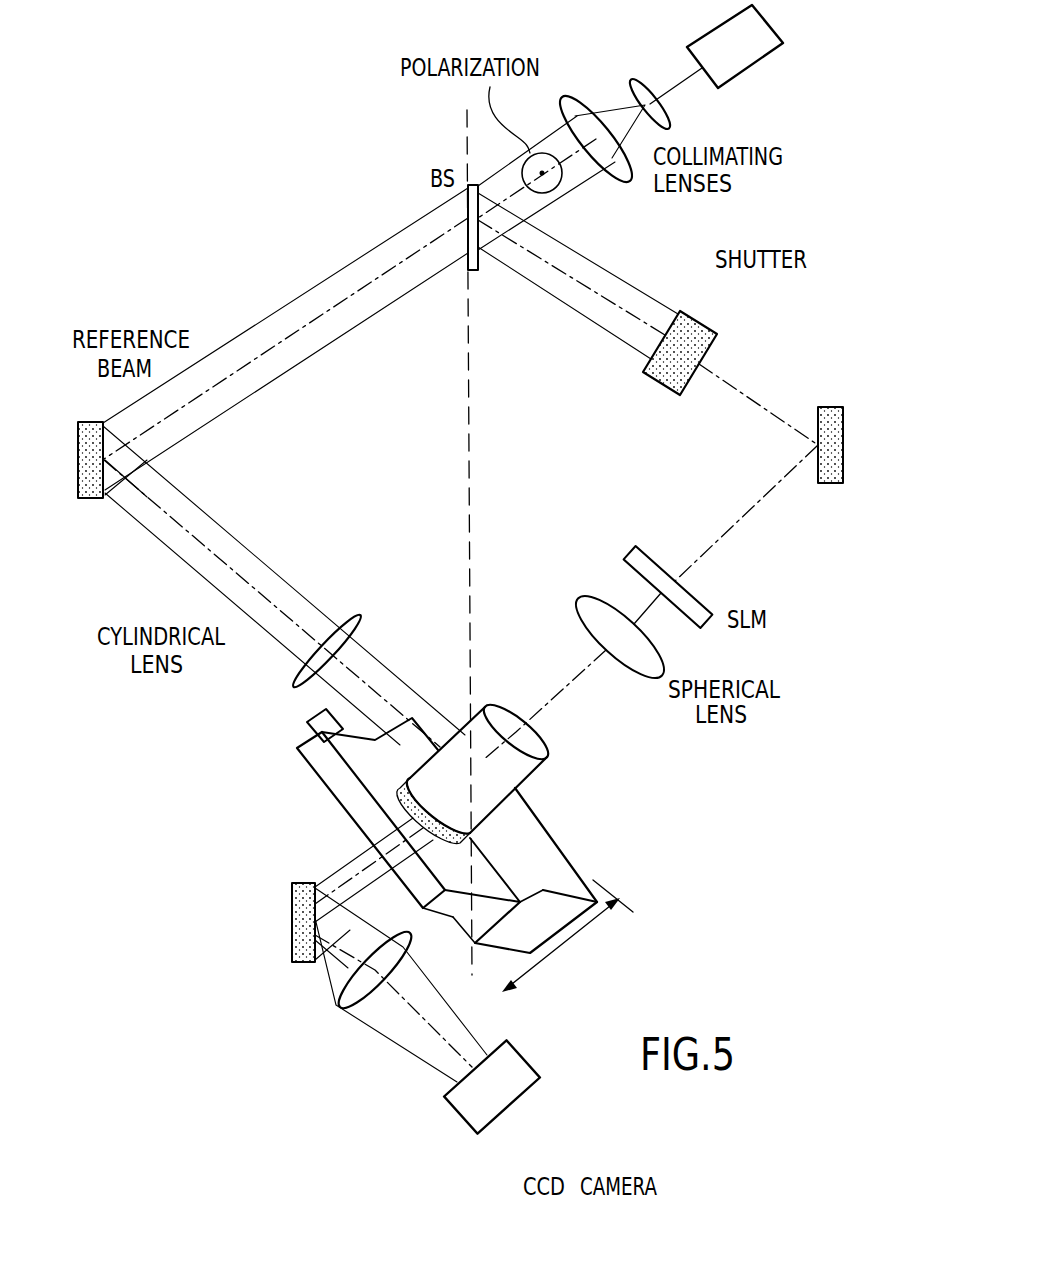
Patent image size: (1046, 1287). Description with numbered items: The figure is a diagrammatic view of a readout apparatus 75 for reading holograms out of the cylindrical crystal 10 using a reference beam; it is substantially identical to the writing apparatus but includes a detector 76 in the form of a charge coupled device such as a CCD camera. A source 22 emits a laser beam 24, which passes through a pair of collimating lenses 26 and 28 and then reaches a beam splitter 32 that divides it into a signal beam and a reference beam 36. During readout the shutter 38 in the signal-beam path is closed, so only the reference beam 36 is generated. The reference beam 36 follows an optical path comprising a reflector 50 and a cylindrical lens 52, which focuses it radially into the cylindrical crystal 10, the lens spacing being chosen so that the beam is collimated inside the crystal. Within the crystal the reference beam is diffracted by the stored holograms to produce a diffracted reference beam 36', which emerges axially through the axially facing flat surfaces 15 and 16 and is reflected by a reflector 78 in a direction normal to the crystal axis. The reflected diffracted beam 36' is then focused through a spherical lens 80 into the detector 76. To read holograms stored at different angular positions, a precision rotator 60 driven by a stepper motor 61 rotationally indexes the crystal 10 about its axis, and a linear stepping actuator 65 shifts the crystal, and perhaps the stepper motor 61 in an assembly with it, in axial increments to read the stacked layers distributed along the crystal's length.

The cylindrical crystal 10 is at (500, 698).
The axially facing flat surface 15 is at (537, 755).
The axially facing flat surface 16 is at (478, 845).
The source 22 is at (741, 59).
The laser beam 24 is at (676, 78).
The collimating lens 26 is at (633, 80).
The collimating lens 28 is at (629, 182).
The beam splitter 32 is at (468, 212).
The reference beam 36 is at (285, 466).
The diffracted reference beam 36' is at (362, 963).
The shutter 38 is at (698, 325).
The reflector 50 is at (90, 497).
The cylindrical lens 52 is at (290, 686).
The precision rotator 60 is at (395, 802).
The stepper motor 61 is at (308, 722).
The linear stepping actuator 65 is at (572, 880).
The readout apparatus 75 is at (325, 252).
The detector 76 is at (500, 1092).
The reflector 78 is at (292, 918).
The spherical lens 80 is at (337, 1003).